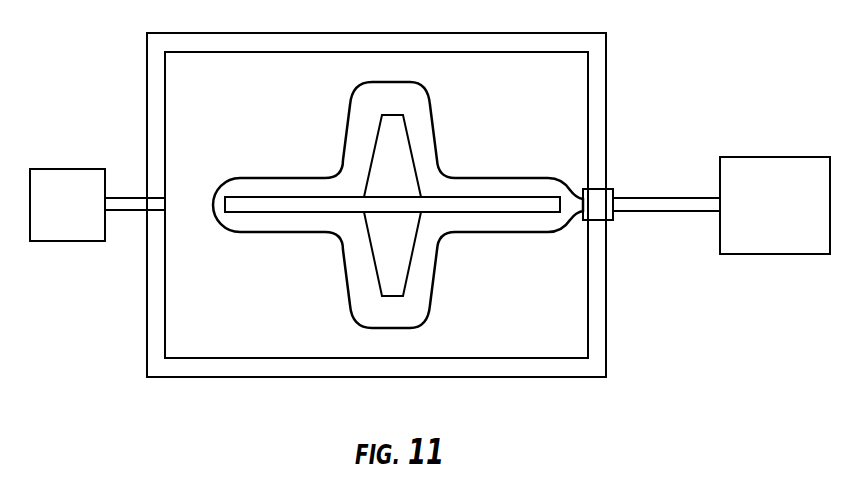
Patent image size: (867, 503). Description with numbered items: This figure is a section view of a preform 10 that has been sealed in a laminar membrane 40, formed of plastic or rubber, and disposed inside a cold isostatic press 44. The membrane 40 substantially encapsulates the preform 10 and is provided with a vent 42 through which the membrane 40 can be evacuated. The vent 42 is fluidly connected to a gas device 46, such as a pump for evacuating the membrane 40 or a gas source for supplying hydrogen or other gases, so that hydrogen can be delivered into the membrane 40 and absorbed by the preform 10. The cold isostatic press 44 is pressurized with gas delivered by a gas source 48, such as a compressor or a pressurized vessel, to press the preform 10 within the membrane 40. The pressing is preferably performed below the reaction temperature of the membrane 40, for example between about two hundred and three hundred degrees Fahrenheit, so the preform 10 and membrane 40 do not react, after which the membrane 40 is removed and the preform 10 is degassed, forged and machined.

The preform 10 is at (418, 145).
The membrane 40 is at (493, 178).
The vent 42 is at (613, 190).
The cold isostatic press 44 is at (608, 318).
The gas device 46 is at (772, 156).
The gas source 48 is at (62, 242).